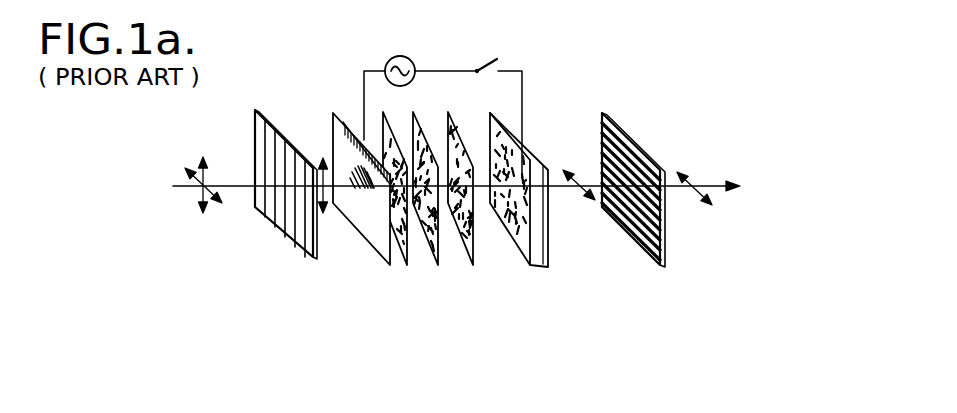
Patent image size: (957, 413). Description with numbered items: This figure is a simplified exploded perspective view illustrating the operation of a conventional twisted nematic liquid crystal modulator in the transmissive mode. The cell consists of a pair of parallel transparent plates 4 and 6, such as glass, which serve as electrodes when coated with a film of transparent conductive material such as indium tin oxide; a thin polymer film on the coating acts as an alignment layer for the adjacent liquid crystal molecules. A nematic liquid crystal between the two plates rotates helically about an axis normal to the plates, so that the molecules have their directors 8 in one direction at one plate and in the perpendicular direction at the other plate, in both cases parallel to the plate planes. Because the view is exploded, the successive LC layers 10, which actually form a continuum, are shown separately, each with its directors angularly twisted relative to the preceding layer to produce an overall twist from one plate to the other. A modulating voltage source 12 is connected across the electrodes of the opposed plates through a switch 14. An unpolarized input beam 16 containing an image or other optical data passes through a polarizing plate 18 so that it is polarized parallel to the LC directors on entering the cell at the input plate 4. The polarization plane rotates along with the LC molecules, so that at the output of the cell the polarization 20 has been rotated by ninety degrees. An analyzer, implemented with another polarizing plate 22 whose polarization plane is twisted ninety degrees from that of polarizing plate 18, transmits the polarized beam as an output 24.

The transparent plate 4 is at (333, 113).
The transparent plate 6 is at (485, 112).
The directors 8 is at (393, 111).
The LC layers 10 is at (427, 115).
The modulating voltage source 12 is at (410, 56).
The switch 14 is at (482, 61).
The unpolarized input beam 16 is at (238, 185).
The polarizing plate 18 is at (288, 229).
The polarization 20 is at (574, 178).
The polarizing plate 22 is at (602, 115).
The output 24 is at (708, 190).